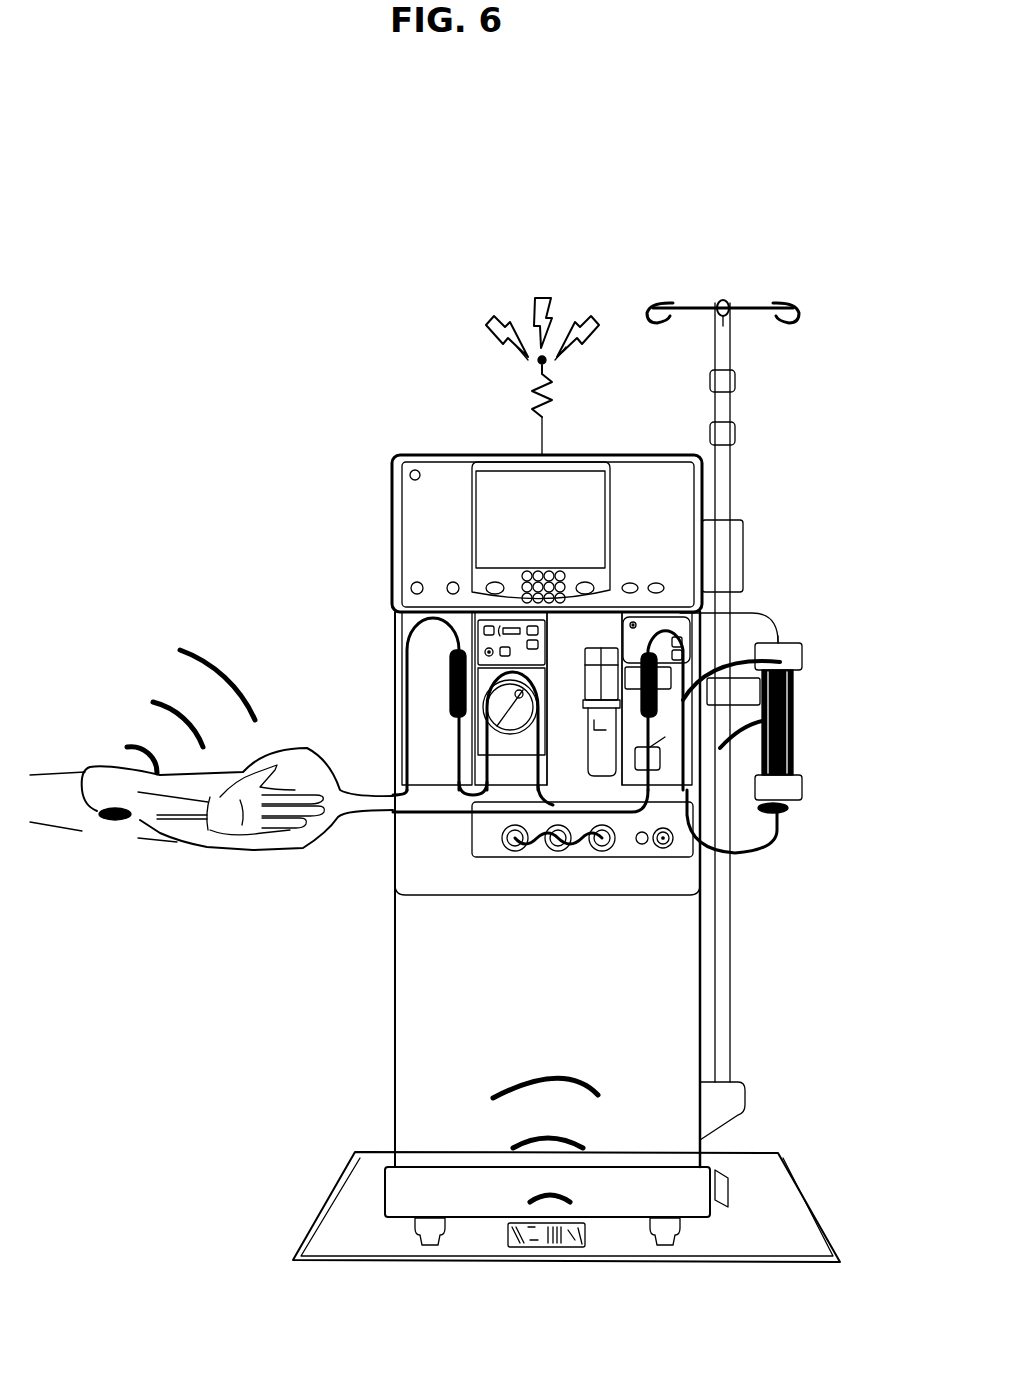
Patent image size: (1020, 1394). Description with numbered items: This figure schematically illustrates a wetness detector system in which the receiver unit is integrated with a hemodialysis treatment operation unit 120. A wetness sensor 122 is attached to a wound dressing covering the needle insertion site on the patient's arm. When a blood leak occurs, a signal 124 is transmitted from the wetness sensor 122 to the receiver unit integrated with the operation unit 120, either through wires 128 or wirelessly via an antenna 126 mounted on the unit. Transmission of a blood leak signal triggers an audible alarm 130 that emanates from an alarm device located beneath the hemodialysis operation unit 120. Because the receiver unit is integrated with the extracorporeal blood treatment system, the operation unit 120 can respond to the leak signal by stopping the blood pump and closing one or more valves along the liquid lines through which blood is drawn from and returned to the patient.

The hemodialysis treatment operation unit 120 is at (395, 208).
The wetness sensor 122 is at (100, 813).
The signal 124 is at (237, 662).
The antenna 126 is at (525, 392).
The wires 128 is at (763, 715).
The audible alarm 130 is at (560, 1236).